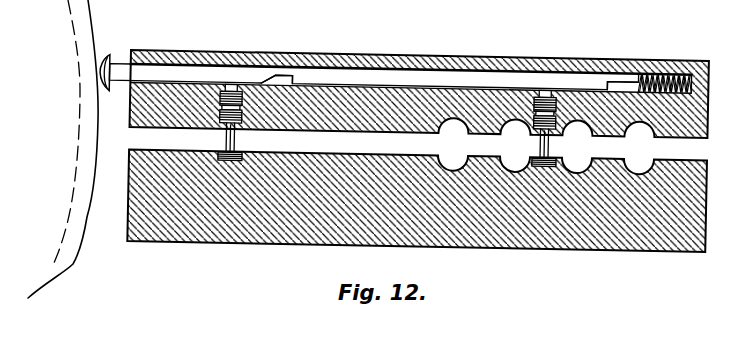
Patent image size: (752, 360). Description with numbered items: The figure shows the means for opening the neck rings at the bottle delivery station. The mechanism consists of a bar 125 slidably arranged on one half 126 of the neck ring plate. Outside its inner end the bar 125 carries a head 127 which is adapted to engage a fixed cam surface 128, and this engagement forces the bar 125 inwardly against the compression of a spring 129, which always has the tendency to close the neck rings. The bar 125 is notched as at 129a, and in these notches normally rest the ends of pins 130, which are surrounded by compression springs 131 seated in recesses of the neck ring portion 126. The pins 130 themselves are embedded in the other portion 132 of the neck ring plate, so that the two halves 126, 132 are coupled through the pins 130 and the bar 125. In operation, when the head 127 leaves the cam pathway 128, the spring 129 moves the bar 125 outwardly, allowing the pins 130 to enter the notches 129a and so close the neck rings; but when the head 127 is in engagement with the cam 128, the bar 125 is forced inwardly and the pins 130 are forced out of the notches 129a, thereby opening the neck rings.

The bar 125 is at (147, 72).
The half of the neck ring plate 126 is at (380, 90).
The head 127 is at (108, 62).
The fixed cam surface 128 is at (97, 125).
The compression spring 129 is at (661, 73).
The notch 129a is at (277, 73).
The pin 130 is at (228, 133).
The compression spring 131 is at (246, 89).
The other portion of the neck ring plate 132 is at (323, 203).